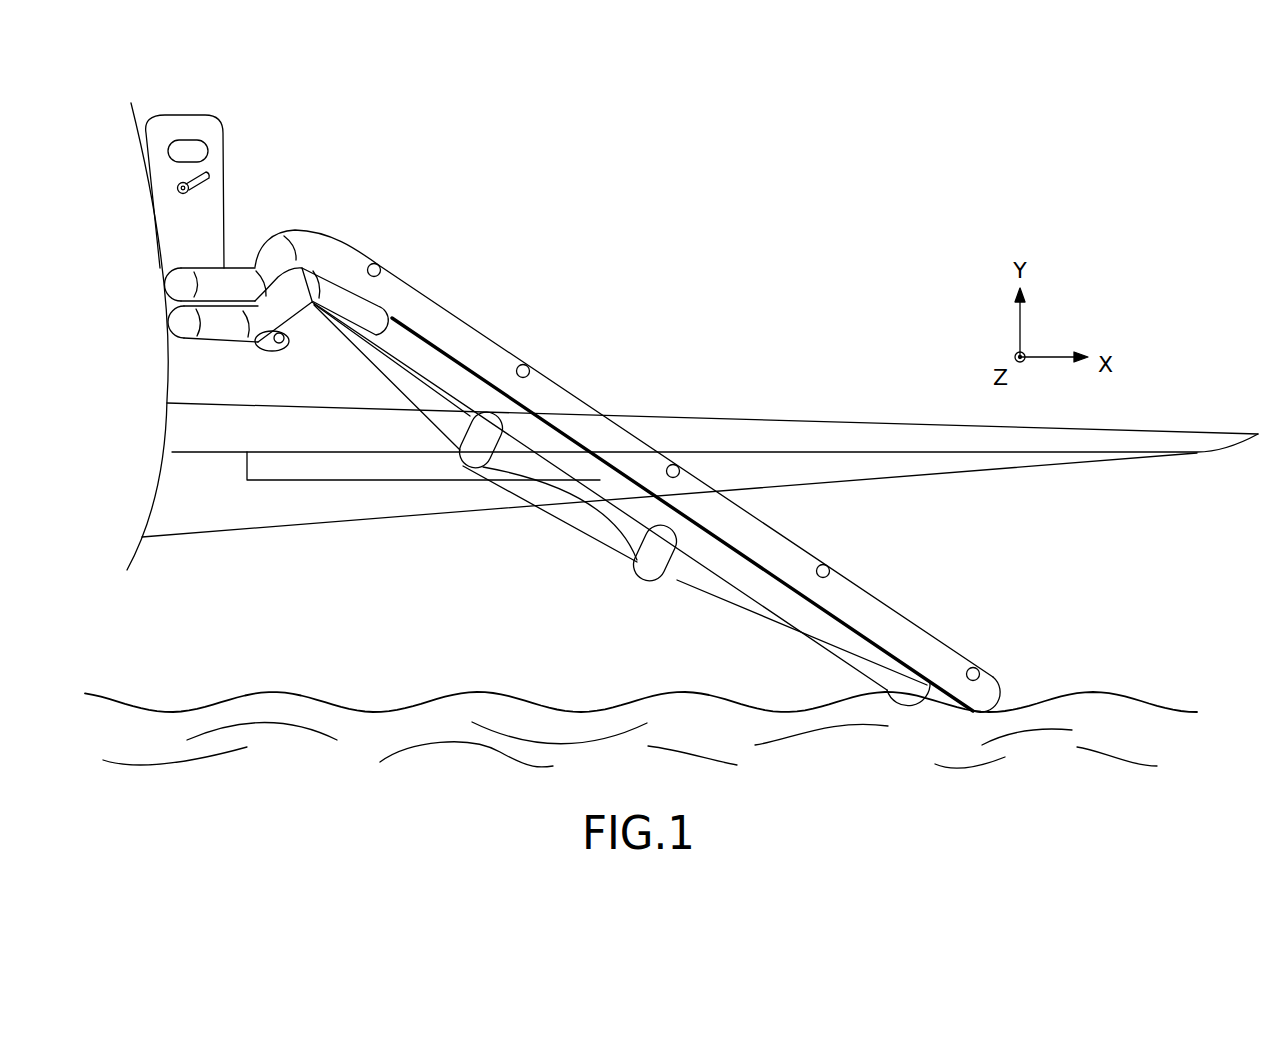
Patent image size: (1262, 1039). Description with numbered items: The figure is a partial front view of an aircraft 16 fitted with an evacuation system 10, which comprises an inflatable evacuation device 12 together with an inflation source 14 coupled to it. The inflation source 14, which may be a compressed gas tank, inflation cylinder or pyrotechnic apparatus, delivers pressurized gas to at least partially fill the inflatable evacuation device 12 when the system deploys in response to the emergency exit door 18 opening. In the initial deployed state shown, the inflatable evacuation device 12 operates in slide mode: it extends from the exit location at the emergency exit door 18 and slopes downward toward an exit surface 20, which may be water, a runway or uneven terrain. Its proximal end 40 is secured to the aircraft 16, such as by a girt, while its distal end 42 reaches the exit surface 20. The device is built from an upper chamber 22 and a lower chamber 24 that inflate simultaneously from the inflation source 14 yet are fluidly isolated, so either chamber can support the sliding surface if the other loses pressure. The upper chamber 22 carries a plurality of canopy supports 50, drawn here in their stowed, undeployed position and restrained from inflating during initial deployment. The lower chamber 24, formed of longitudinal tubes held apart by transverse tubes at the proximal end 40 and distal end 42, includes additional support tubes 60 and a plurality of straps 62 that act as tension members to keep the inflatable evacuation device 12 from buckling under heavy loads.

The evacuation system 10 is at (618, 183).
The inflatable evacuation device 12 is at (494, 302).
The inflation source 14 is at (289, 349).
The aircraft 16 is at (133, 553).
The emergency exit door 18 is at (223, 199).
The exit surface 20 is at (468, 698).
The upper chamber 22 is at (574, 401).
The lower chamber 24 is at (713, 551).
The proximal end 40 is at (150, 265).
The distal end 42 is at (1012, 668).
The canopy supports 50 is at (379, 263).
The support tubes 60 is at (463, 466).
The straps 62 is at (553, 520).